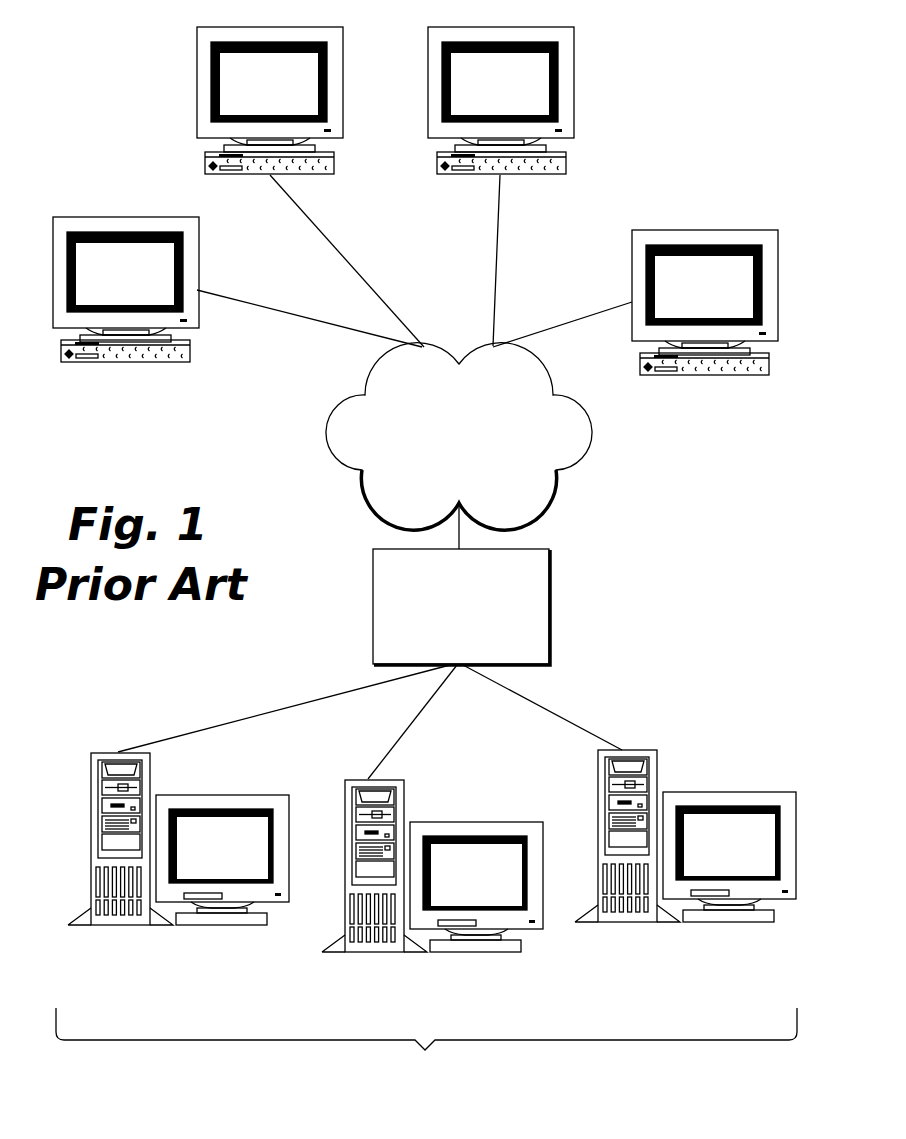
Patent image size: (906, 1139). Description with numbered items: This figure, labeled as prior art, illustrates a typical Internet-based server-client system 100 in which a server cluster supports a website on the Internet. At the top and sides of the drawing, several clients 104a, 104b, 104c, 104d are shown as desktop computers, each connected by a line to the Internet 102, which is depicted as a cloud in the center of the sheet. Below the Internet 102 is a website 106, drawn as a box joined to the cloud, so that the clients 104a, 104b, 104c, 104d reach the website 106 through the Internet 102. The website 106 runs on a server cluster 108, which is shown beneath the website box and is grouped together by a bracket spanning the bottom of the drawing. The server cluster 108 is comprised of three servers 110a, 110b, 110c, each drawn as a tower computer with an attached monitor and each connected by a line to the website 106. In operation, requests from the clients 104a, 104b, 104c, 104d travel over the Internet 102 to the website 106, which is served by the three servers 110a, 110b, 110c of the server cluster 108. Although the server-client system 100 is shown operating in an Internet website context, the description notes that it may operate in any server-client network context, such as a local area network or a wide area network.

The server-client system 100 is at (664, 535).
The Internet 102 is at (459, 436).
The client 104a is at (128, 362).
The client 104b is at (197, 97).
The client 104c is at (573, 97).
The client 104d is at (705, 375).
The website 106 is at (461, 607).
The server cluster 108 is at (426, 930).
The server 110a is at (178, 867).
The server 110b is at (432, 897).
The server 110c is at (685, 866).